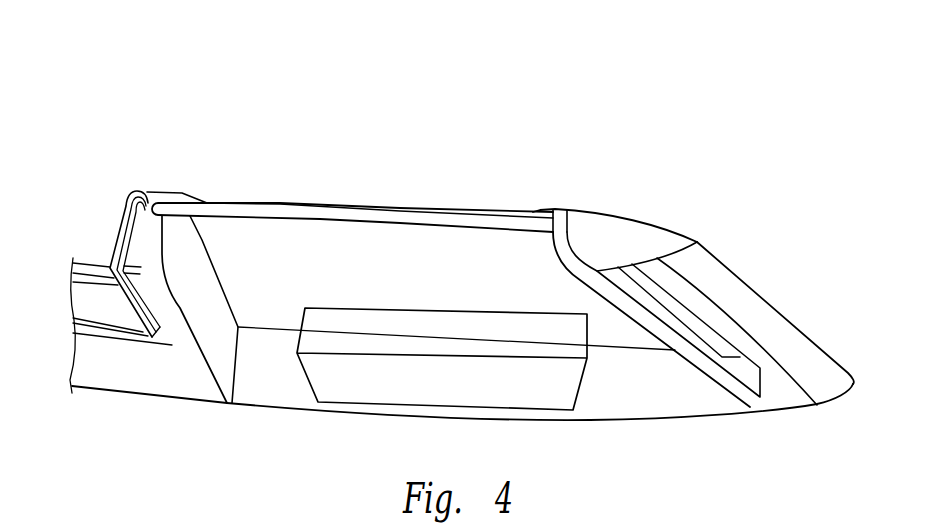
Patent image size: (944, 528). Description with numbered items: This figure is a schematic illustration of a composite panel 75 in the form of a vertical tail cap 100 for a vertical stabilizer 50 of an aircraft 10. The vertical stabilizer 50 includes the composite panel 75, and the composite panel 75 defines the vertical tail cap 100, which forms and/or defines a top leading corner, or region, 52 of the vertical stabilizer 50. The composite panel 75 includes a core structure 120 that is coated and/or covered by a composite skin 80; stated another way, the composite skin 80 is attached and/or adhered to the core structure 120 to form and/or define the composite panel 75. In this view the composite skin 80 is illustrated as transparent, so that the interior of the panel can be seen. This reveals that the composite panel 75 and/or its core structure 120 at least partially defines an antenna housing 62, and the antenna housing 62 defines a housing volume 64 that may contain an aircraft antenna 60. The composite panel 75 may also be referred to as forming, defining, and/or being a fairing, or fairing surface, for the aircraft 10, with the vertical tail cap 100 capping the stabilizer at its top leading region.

The aircraft 10 is at (736, 94).
The vertical stabilizer 50 is at (709, 146).
The top leading corner 52 is at (660, 274).
The aircraft antenna 60 is at (380, 325).
The antenna housing 62 is at (428, 238).
The housing volume 64 is at (468, 250).
The composite panel 75 is at (301, 200).
The composite skin 80 is at (533, 247).
The vertical tail cap 100 is at (135, 189).
The core structure 120 is at (225, 232).